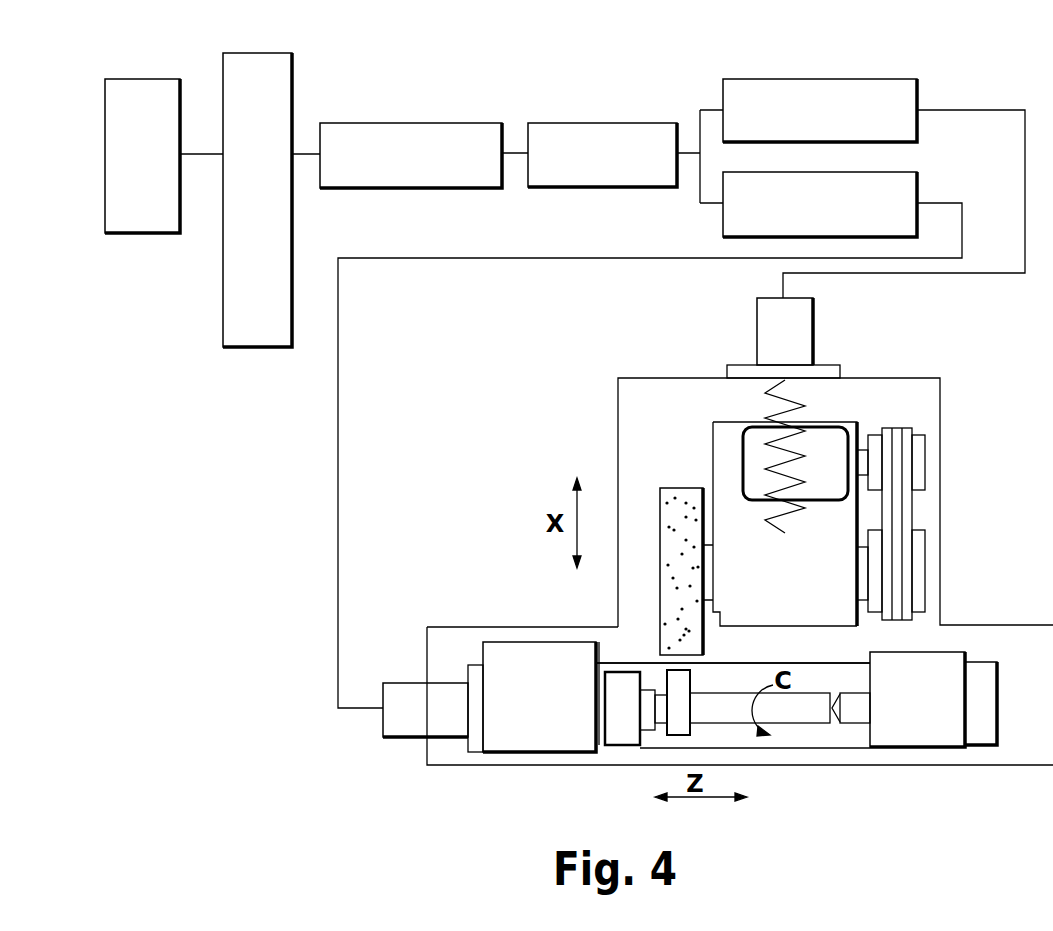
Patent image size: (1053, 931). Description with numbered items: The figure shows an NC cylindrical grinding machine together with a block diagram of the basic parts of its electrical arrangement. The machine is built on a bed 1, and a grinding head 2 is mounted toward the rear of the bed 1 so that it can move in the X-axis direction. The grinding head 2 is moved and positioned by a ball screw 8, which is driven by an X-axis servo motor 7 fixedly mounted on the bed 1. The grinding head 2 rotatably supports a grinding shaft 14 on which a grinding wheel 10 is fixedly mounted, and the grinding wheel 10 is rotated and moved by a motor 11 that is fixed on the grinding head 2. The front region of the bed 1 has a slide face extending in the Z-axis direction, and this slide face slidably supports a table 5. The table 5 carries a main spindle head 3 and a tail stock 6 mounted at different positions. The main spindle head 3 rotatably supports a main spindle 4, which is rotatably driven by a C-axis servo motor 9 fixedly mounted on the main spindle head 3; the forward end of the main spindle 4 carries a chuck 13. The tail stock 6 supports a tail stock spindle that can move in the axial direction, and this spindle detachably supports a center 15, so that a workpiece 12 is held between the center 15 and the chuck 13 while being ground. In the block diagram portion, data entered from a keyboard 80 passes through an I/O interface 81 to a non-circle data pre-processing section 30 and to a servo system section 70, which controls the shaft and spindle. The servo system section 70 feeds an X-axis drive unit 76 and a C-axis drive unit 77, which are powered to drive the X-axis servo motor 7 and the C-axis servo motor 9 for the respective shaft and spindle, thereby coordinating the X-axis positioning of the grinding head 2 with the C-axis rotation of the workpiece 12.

The bed 1 is at (883, 407).
The grinding head 2 is at (812, 598).
The main spindle head 3 is at (527, 717).
The main spindle 4 is at (597, 747).
The table 5 is at (812, 730).
The tail stock 6 is at (935, 725).
The X-axis servo motor 7 is at (795, 328).
The ball screw 8 is at (792, 407).
The C-axis servo motor 9 is at (417, 715).
The grinding wheel 10 is at (660, 525).
The motor 11 is at (825, 467).
The workpiece 12 is at (705, 707).
The chuck 13 is at (627, 722).
The grinding shaft 14 is at (712, 553).
The center 15 is at (853, 708).
The non-circle data pre-processing section 30 is at (408, 123).
The servo system section 70 is at (583, 123).
The X-axis drive unit 76 is at (883, 93).
The C-axis drive unit 77 is at (883, 182).
The keyboard 80 is at (140, 79).
The I/O interface 81 is at (292, 97).